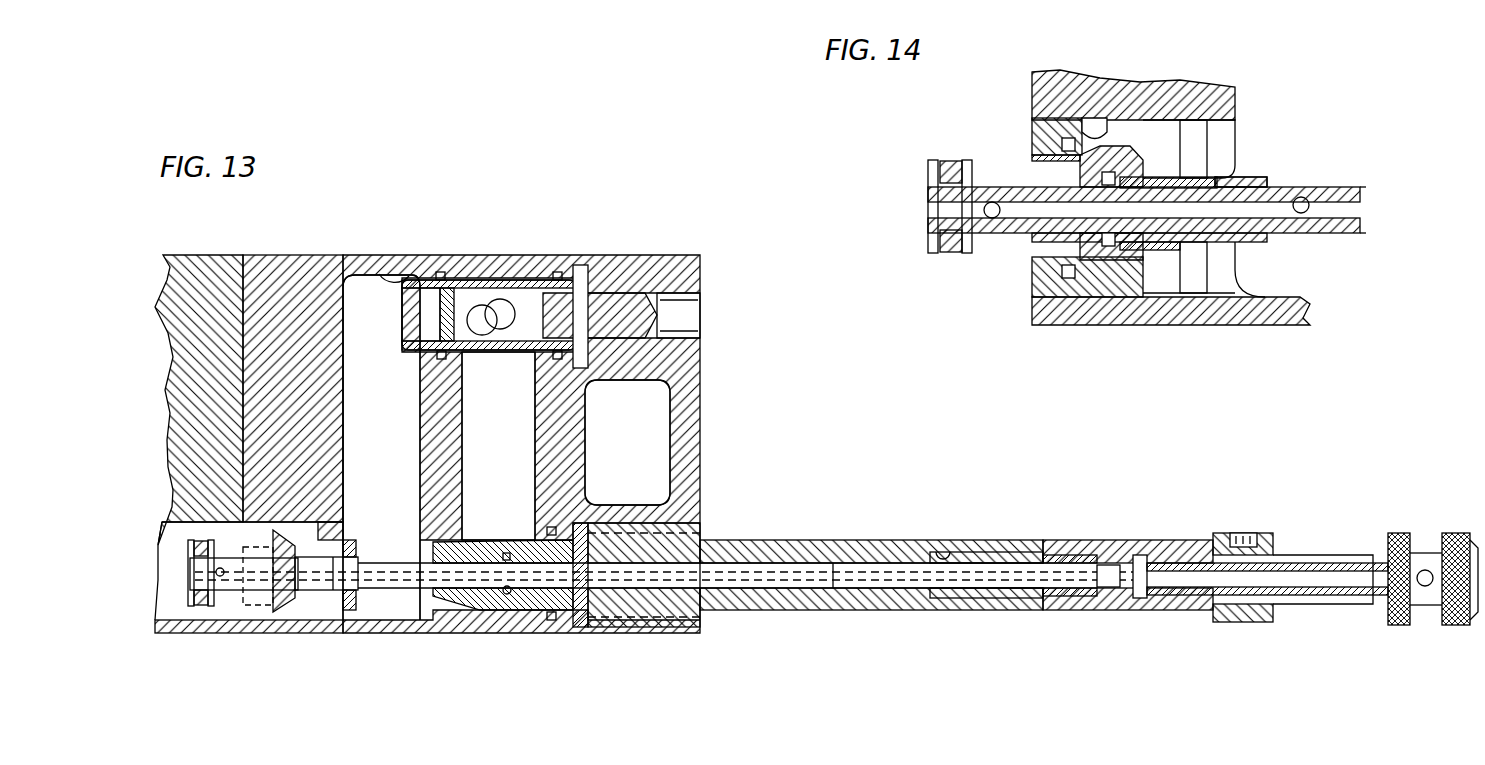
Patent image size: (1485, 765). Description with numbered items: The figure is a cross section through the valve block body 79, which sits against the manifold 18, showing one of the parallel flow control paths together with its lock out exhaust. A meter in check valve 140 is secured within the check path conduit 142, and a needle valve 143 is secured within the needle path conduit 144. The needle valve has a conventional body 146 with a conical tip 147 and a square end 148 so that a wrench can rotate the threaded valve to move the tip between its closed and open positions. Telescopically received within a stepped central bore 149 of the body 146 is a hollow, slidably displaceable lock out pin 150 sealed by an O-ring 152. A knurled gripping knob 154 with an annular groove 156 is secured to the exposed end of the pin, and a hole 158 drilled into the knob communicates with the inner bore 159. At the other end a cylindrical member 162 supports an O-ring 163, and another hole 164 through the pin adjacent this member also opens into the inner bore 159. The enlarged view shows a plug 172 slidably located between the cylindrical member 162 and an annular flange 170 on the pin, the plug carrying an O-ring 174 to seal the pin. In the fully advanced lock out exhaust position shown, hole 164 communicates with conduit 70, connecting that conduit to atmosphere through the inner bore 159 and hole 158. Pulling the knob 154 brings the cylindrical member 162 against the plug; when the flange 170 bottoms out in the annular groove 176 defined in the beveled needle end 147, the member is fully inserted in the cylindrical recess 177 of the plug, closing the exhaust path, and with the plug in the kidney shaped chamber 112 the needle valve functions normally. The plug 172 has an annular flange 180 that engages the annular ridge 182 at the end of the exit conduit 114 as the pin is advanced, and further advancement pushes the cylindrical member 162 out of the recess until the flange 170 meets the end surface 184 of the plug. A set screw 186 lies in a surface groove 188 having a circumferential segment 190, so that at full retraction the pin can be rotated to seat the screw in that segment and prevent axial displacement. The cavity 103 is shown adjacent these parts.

In FIG. 13, the manifold 18 is at (195, 268).
In FIG. 13, the valve block body 79 is at (298, 270).
In FIG. 13, the conduit 70 is at (188, 524).
In FIG. 13, the kidney shaped chamber 112 is at (360, 422).
In FIG. 13, the cavity 103 is at (480, 422).
In FIG. 13, the conduit 142 is at (385, 270).
In FIG. 13, the meter in check valve 140 is at (530, 272).
In FIG. 13, the annular groove 176 is at (475, 590).
In FIG. 13, the conduit 144 is at (438, 545).
In FIG. 13, the O-ring 152 is at (508, 594).
In FIG. 13, the conical tip 147 is at (438, 610).
In FIG. 13, the cylindrical member 162 is at (178, 598).
In FIG. 14, the cylindrical member 162 is at (925, 258).
In FIG. 13, the O-ring 163 is at (200, 608).
In FIG. 14, the O-ring 163 is at (953, 252).
In FIG. 13, the hole 164 is at (220, 576).
In FIG. 14, the hole 164 is at (993, 201).
In FIG. 13, the cylindrical recess 177 is at (280, 612).
In FIG. 14, the cylindrical recess 177 is at (1050, 252).
In FIG. 13, the plug 172 is at (292, 598).
In FIG. 14, the plug 172 is at (1133, 157).
In FIG. 13, the annular flange 170 is at (358, 590).
In FIG. 14, the annular flange 170 is at (1253, 175).
In FIG. 13, the exit conduit 114 is at (305, 532).
In FIG. 14, the exit conduit 114 is at (1175, 125).
In FIG. 13, the needle valve 143 is at (780, 543).
In FIG. 13, the stepped central bore 149 is at (953, 548).
In FIG. 13, the lock out pin 150 is at (1007, 590).
In FIG. 14, the lock out pin 150 is at (1015, 224).
In FIG. 13, the inner bore 159 is at (975, 560).
In FIG. 14, the inner bore 159 is at (1302, 198).
In FIG. 13, the body 146 is at (1065, 542).
In FIG. 13, the circumferential segment 190 is at (1147, 585).
In FIG. 13, the surface groove 188 is at (1182, 560).
In FIG. 13, the square end 148 is at (1268, 536).
In FIG. 13, the set screw 186 is at (1243, 540).
In FIG. 13, the knurled gripping knob 154 is at (1455, 533).
In FIG. 13, the annular groove 156 is at (1432, 605).
In FIG. 13, the hole 158 is at (1425, 590).
In FIG. 14, the annular ridge 182 is at (1108, 140).
In FIG. 14, the O-ring 174 is at (1117, 246).
In FIG. 14, the annular flange 180 is at (1082, 268).
In FIG. 14, the end surface 184 is at (1240, 176).